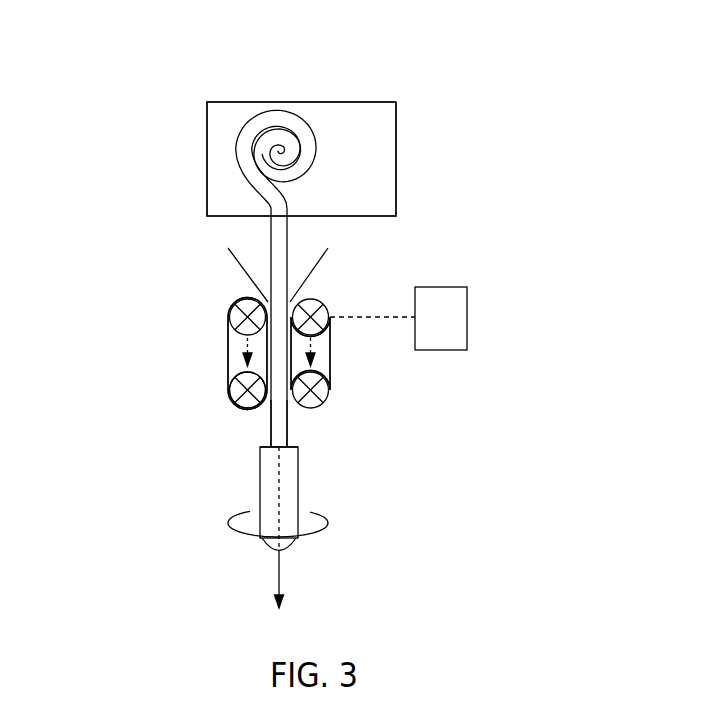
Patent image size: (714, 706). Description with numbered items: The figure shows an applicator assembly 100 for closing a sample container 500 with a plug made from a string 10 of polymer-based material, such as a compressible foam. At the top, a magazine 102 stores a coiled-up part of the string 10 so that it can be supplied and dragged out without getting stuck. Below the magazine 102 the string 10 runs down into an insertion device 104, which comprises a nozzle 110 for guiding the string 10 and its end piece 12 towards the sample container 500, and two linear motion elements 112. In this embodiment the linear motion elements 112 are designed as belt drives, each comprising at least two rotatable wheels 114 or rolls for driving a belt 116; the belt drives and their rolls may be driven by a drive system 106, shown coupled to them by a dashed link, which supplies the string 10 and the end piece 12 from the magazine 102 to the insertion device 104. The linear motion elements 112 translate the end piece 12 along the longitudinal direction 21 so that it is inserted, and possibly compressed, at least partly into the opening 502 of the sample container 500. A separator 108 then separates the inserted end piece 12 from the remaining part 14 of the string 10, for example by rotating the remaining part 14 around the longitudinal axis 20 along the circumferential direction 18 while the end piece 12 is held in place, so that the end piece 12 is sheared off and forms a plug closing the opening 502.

The applicator assembly 100 is at (478, 146).
The magazine 102 is at (417, 87).
The string 10 is at (304, 242).
The remaining part of the string 14 is at (258, 244).
The nozzle 110 is at (330, 278).
The insertion device 104 is at (202, 300).
The separator 108 is at (174, 342).
The linear motion elements 112 is at (212, 365).
The belt 116 is at (229, 388).
The rotatable wheels 114 is at (245, 408).
The drive system 106 is at (486, 310).
The end piece 12 is at (261, 438).
The opening 502 is at (309, 432).
The sample container 500 is at (315, 468).
The circumferential direction 18 is at (314, 505).
The longitudinal axis 20 is at (262, 536).
The longitudinal direction 21 is at (279, 565).